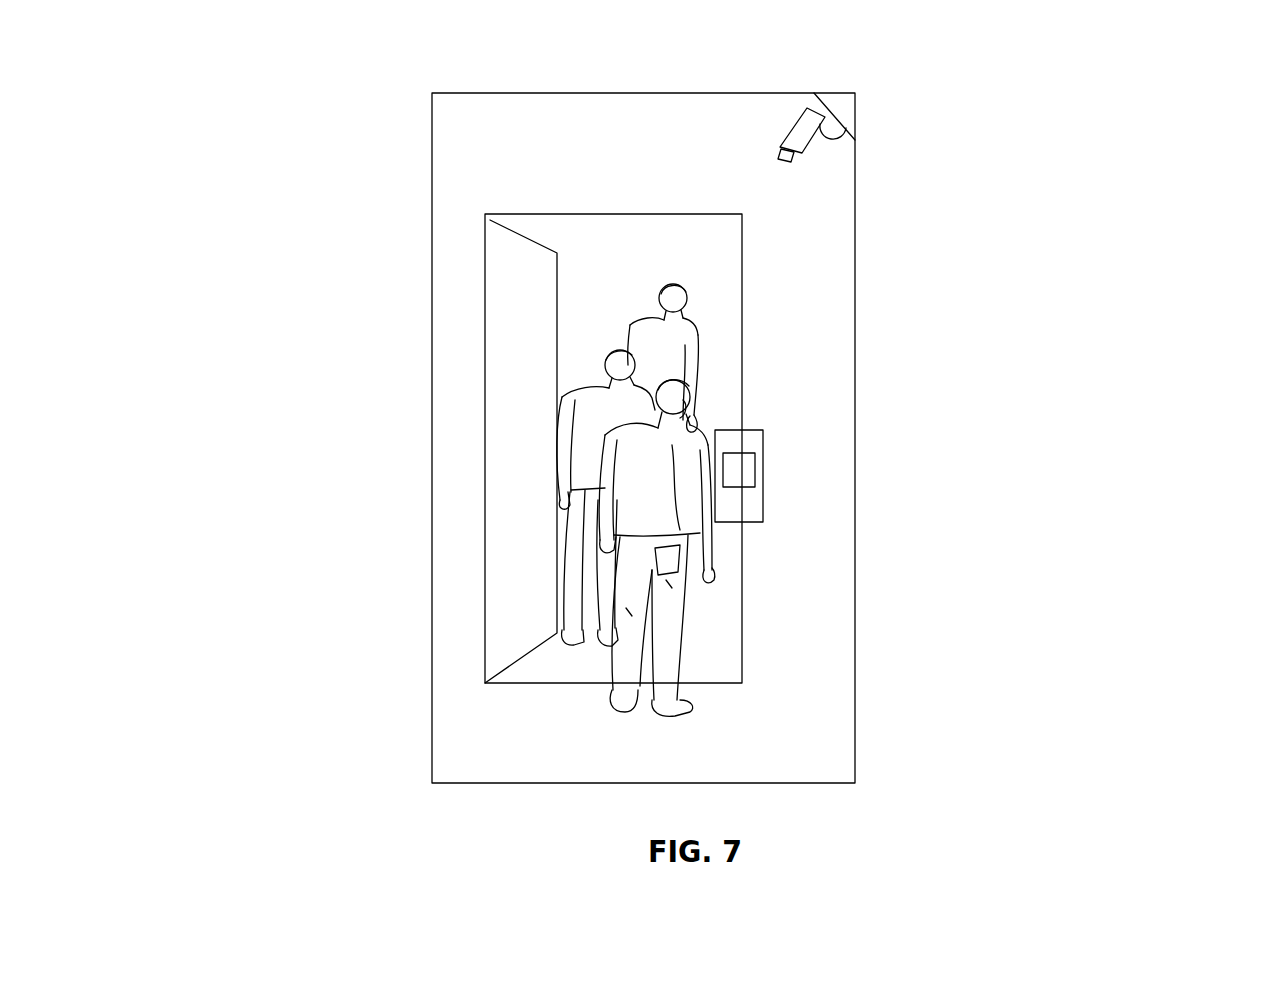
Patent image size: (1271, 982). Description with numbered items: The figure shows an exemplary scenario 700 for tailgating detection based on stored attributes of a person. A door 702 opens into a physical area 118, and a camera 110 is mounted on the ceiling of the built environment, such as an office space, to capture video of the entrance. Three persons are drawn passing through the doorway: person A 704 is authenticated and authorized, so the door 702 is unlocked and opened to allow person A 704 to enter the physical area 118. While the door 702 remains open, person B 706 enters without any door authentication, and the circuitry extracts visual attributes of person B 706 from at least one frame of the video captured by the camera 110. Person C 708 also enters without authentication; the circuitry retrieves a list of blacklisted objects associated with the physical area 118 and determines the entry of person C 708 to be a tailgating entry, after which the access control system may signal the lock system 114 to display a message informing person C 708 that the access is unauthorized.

The exemplary scenario 700 is at (181, 76).
The physical area 118 is at (575, 236).
The door 702 is at (508, 288).
The camera 110 is at (855, 93).
The lock system 114 is at (763, 475).
The person A 704 is at (657, 340).
The person B 706 is at (595, 413).
The person C 708 is at (672, 588).